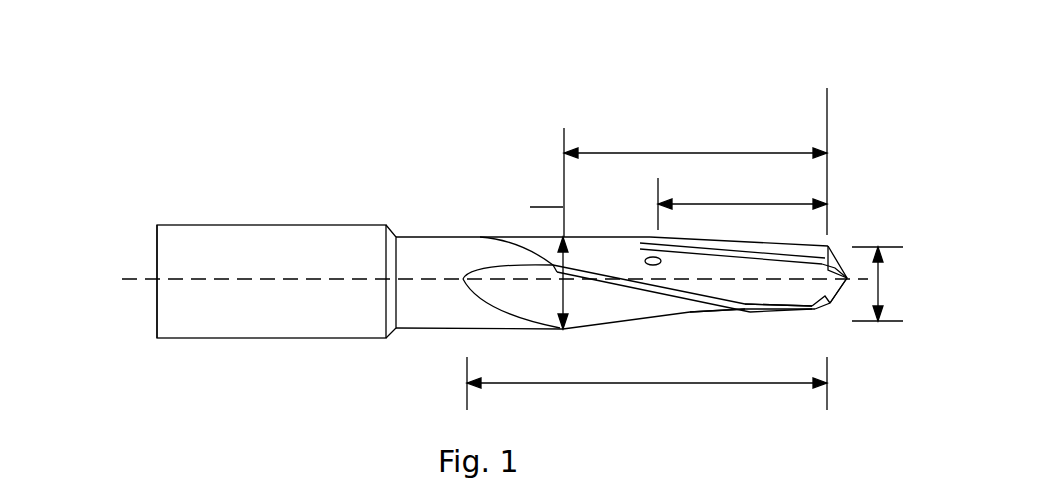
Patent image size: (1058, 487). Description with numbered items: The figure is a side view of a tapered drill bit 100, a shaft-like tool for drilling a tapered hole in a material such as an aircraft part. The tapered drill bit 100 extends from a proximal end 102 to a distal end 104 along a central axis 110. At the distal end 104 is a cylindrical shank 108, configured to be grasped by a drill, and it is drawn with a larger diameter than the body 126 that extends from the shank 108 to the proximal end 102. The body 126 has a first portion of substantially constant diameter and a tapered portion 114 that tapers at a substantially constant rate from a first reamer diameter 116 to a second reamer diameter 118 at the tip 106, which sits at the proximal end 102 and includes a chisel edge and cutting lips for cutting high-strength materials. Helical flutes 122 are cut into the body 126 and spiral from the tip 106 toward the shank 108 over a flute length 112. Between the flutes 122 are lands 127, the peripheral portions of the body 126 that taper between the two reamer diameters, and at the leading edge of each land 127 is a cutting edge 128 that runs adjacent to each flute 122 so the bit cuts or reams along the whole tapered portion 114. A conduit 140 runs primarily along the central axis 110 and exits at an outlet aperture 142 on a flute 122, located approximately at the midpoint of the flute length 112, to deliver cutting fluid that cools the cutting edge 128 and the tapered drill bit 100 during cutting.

The tapered drill bit 100 is at (256, 72).
The proximal end 102 is at (842, 326).
The distal end 104 is at (150, 313).
The tip 106 is at (843, 248).
The shank 108 is at (271, 235).
The central axis 110 is at (347, 278).
The flute length 112 is at (724, 383).
The tapered portion 114 is at (700, 153).
The first reamer diameter 116 is at (547, 207).
The second reamer diameter 118 is at (885, 282).
The flutes 122 is at (587, 236).
The body 126 is at (442, 246).
The land 127 is at (668, 312).
The cutting edge 128 is at (745, 293).
The conduit 140 is at (748, 203).
The outlet aperture 142 is at (645, 256).